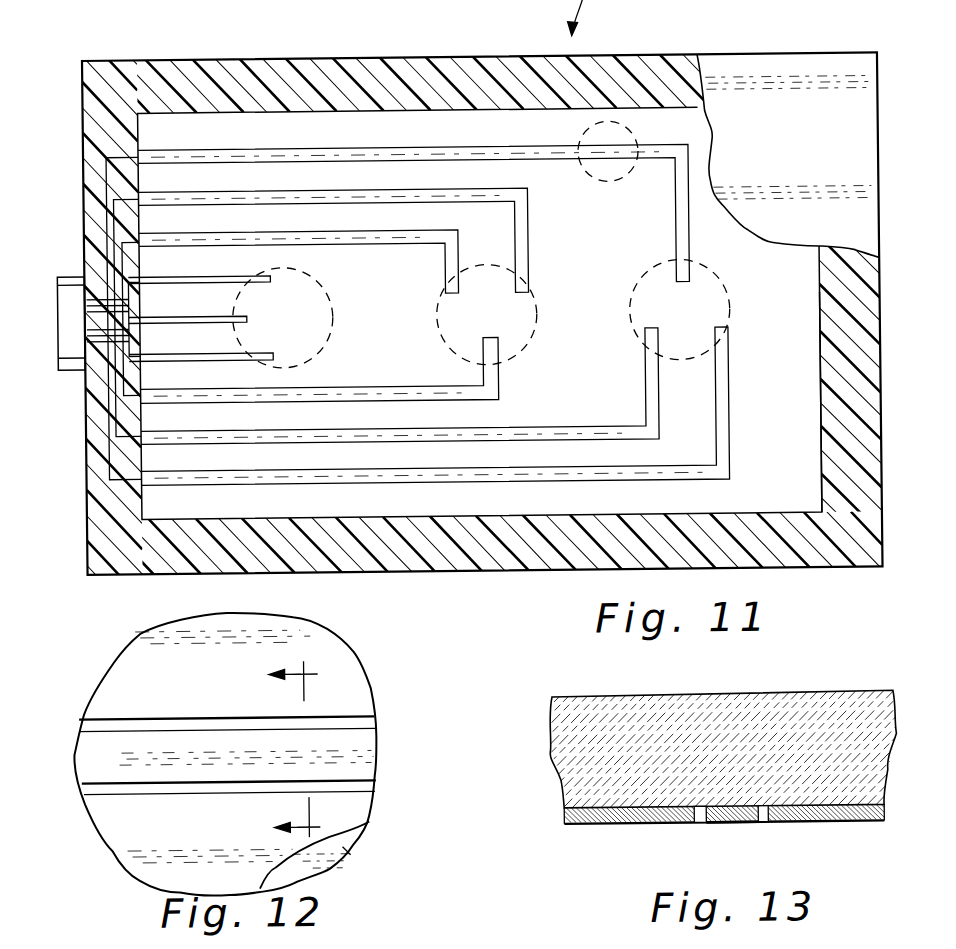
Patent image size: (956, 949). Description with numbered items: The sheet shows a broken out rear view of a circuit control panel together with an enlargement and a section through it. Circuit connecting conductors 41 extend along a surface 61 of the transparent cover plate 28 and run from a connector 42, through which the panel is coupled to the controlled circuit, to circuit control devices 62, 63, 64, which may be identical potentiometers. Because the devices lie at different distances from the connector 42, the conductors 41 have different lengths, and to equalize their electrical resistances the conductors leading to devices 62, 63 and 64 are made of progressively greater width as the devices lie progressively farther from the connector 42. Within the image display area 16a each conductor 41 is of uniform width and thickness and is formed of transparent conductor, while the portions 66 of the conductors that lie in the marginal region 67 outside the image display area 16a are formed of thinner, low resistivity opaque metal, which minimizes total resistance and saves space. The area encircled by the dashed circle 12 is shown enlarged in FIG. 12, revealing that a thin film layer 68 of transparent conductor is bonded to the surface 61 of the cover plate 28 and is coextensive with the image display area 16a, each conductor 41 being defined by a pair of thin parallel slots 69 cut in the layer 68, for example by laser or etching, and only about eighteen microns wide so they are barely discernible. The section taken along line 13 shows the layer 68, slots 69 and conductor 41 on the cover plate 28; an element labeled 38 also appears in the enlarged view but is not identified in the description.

In FIG. 11, the dashed circle 12 is at (604, 188).
In FIG. 12, the section line 13 is at (277, 752).
In FIG. 11, the image display area 16a is at (181, 137).
In FIG. 11, the transparent cover plate 28 is at (452, 100).
In FIG. 13, the transparent cover plate 28 is at (550, 750).
In FIG. 12, the edge region 38 is at (333, 877).
In FIG. 11, the circuit connecting conductors 41 is at (399, 151).
In FIG. 12, the circuit connecting conductors 41 is at (355, 738).
In FIG. 13, the circuit connecting conductors 41 is at (728, 826).
In FIG. 11, the connector 42 is at (320, 2).
In FIG. 11, the surface 61 is at (792, 388).
In FIG. 12, the surface 61 is at (340, 848).
In FIG. 11, the circuit control device 62 is at (332, 365).
In FIG. 11, the circuit control device 63 is at (517, 358).
In FIG. 11, the circuit control device 64 is at (730, 300).
In FIG. 11, the conductor portions 66 is at (116, 142).
In FIG. 11, the marginal region 67 is at (330, 99).
In FIG. 12, the thin film layer 68 is at (330, 643).
In FIG. 13, the thin film layer 68 is at (617, 828).
In FIG. 12, the thin parallel slots 69 is at (177, 733).
In FIG. 13, the thin parallel slots 69 is at (703, 826).